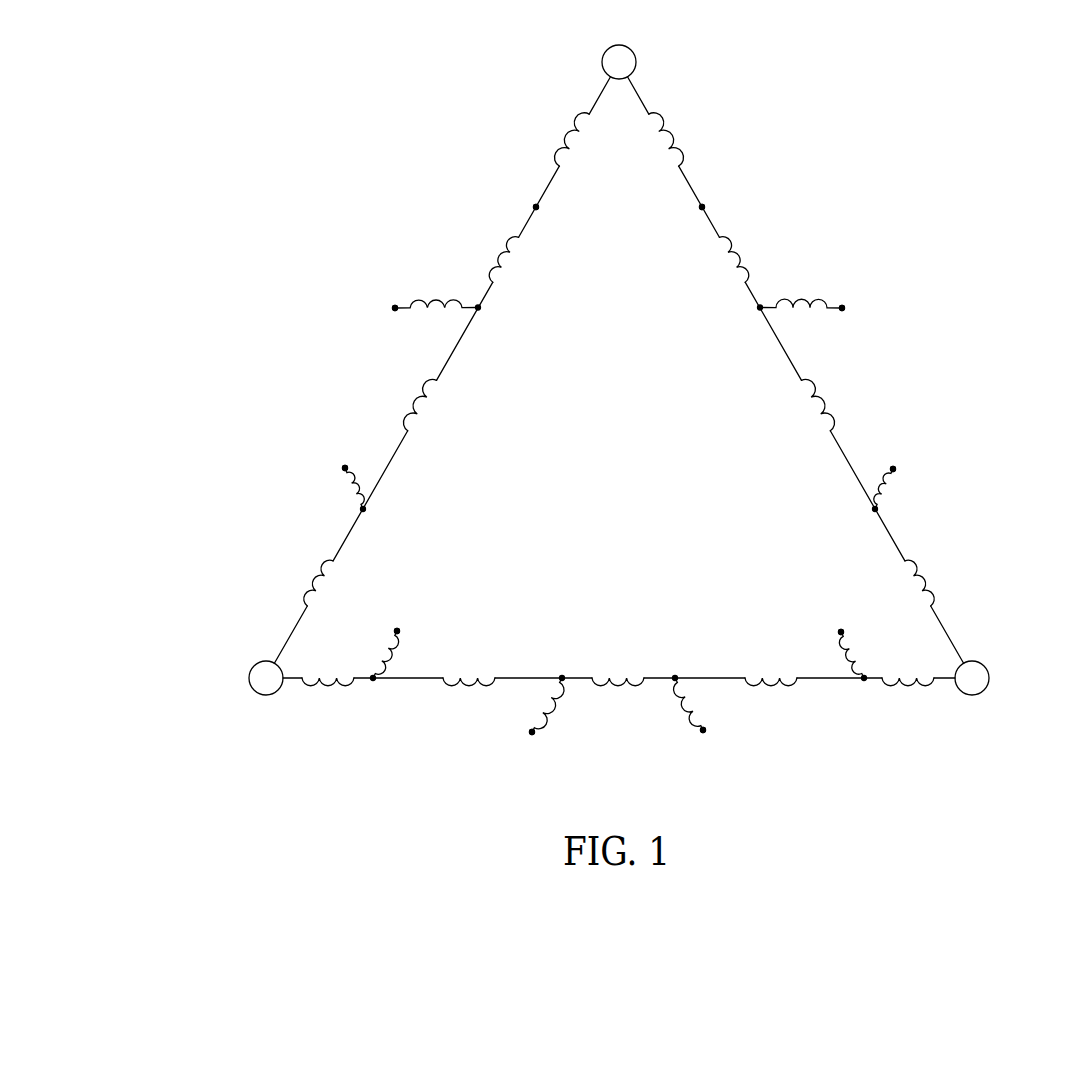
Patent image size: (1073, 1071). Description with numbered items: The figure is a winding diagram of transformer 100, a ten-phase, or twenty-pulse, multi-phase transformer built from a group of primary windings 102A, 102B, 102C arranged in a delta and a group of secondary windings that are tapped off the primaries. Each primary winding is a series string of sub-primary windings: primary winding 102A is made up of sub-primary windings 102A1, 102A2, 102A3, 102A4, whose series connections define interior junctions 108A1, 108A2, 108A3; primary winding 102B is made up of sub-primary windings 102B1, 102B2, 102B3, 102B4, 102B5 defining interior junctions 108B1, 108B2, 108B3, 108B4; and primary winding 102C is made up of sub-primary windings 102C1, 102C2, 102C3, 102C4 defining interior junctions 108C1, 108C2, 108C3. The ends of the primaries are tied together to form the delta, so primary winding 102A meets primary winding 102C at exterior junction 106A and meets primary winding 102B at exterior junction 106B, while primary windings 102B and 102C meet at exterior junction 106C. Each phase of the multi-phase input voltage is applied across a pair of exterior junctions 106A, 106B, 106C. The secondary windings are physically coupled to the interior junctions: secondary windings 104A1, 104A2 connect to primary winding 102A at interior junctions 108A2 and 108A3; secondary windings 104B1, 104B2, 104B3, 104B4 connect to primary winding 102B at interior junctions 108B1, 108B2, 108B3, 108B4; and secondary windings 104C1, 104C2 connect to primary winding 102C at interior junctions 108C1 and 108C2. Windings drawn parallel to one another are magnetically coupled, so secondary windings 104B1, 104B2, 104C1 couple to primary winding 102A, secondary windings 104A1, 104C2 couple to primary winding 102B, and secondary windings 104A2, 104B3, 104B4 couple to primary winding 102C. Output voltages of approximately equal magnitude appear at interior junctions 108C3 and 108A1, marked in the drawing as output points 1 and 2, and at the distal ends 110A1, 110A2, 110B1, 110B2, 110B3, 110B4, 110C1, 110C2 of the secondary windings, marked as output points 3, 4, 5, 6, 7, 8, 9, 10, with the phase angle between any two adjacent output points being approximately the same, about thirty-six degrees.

The transformer 100 is at (324, 96).
The exterior junction 106A is at (606, 50).
The exterior junction 106B is at (986, 689).
The exterior junction 106C is at (253, 689).
The primary winding 102A is at (788, 365).
The primary winding 102B is at (652, 677).
The primary winding 102C is at (450, 366).
The sub-primary winding 102A1 is at (705, 116).
The sub-primary winding 102A2 is at (775, 230).
The sub-primary winding 102A3 is at (870, 386).
The sub-primary winding 102A4 is at (931, 588).
The sub-primary winding 102B1 is at (916, 690).
The sub-primary winding 102B2 is at (778, 690).
The sub-primary winding 102B3 is at (621, 690).
The sub-primary winding 102B4 is at (468, 690).
The sub-primary winding 102B5 is at (322, 690).
The sub-primary winding 102C1 is at (307, 588).
The sub-primary winding 102C2 is at (424, 395).
The sub-primary winding 102C3 is at (503, 257).
The sub-primary winding 102C4 is at (566, 129).
The secondary winding 104A1 is at (807, 296).
The secondary winding 104A2 is at (886, 496).
The secondary winding 104B1 is at (880, 622).
The secondary winding 104B2 is at (729, 716).
The secondary winding 104B3 is at (560, 706).
The secondary winding 104B4 is at (386, 642).
The secondary winding 104C1 is at (352, 496).
The secondary winding 104C2 is at (433, 299).
The interior junction 108A1 is at (710, 206).
The interior junction 108A2 is at (756, 312).
The interior junction 108A3 is at (870, 514).
The interior junction 108B1 is at (866, 690).
The interior junction 108B2 is at (680, 672).
The interior junction 108B3 is at (560, 672).
The interior junction 108B4 is at (373, 690).
The interior junction 108C1 is at (368, 514).
The interior junction 108C2 is at (482, 312).
The interior junction 108C3 is at (531, 204).
The distal end 110A1 is at (848, 311).
The distal end 110A2 is at (897, 466).
The distal end 110B1 is at (836, 634).
The distal end 110B2 is at (705, 745).
The distal end 110B3 is at (532, 746).
The distal end 110B4 is at (402, 634).
The distal end 110C1 is at (342, 465).
The distal end 110C2 is at (392, 310).
The node 1 is at (531, 194).
The node 2 is at (707, 193).
The tap terminal 3 is at (850, 295).
The tap terminal 4 is at (904, 469).
The tap terminal 5 is at (834, 619).
The tap terminal 6 is at (715, 732).
The tap terminal 7 is at (525, 732).
The tap terminal 8 is at (407, 618).
The tap terminal 9 is at (335, 469).
The tap terminal 10 is at (388, 296).